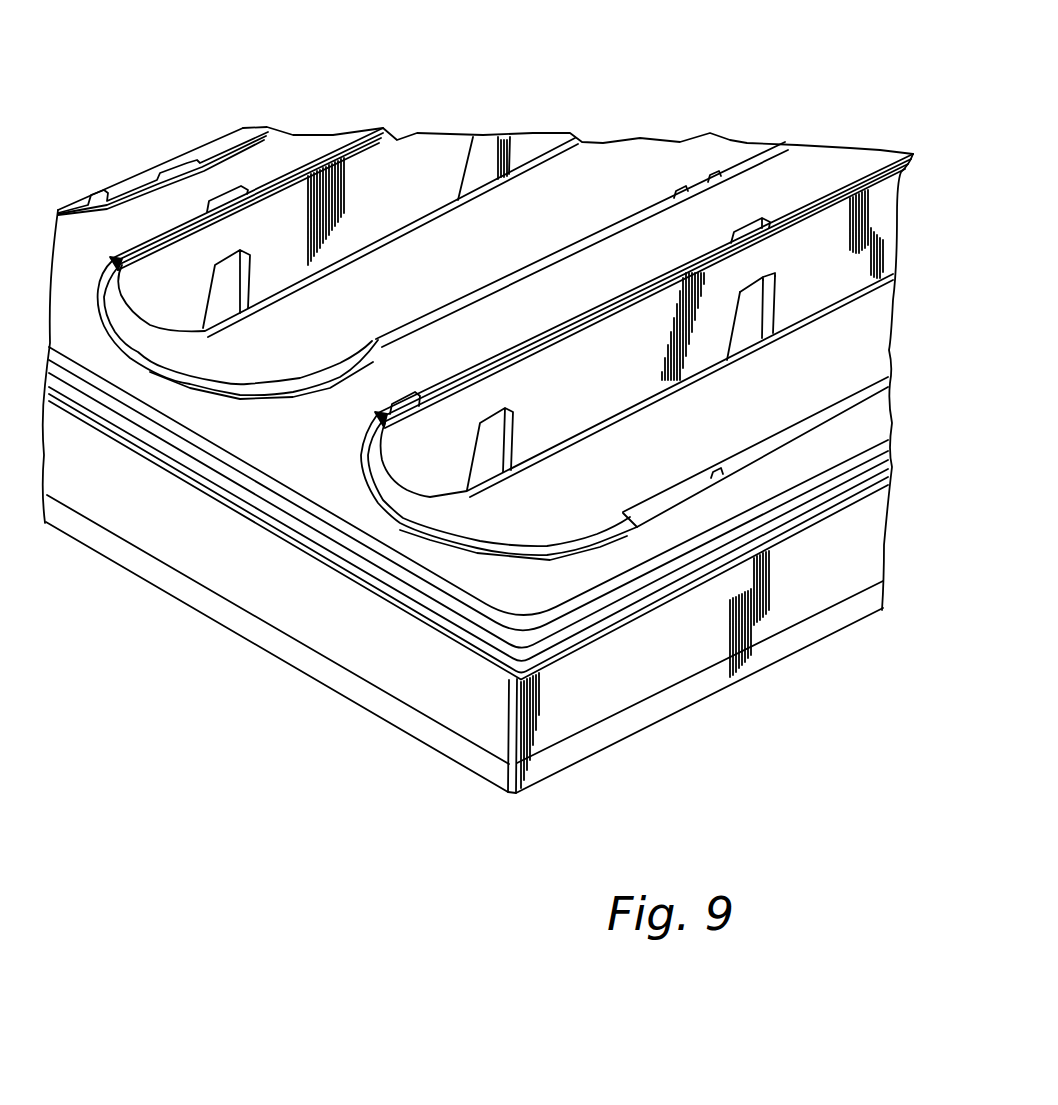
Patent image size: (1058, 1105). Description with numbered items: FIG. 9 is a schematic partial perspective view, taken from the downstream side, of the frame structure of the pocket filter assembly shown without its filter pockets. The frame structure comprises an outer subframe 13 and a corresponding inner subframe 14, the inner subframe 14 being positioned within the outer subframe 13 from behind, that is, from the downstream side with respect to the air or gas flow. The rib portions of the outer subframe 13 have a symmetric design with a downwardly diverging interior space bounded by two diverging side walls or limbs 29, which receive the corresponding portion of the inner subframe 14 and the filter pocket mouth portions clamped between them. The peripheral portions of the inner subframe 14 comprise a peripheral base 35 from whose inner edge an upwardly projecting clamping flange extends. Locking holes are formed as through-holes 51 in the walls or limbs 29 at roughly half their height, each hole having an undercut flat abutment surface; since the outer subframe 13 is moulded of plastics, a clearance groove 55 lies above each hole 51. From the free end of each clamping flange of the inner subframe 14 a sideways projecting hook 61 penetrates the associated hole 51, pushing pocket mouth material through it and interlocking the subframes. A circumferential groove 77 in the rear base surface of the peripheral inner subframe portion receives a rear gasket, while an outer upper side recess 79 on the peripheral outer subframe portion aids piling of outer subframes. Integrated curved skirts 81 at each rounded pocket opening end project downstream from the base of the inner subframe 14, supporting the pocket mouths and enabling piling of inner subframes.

The outer subframe 13 is at (277, 603).
The inner subframe 14 is at (814, 168).
The side wall or limb 29 is at (618, 375).
The peripheral base 35 is at (278, 147).
The through-hole 51 is at (503, 424).
The clearance groove 55 is at (743, 337).
The hook 61 is at (750, 296).
The circumferential groove 77 is at (576, 616).
The outer upper side recess 79 is at (625, 720).
The curved skirt 81 is at (240, 372).